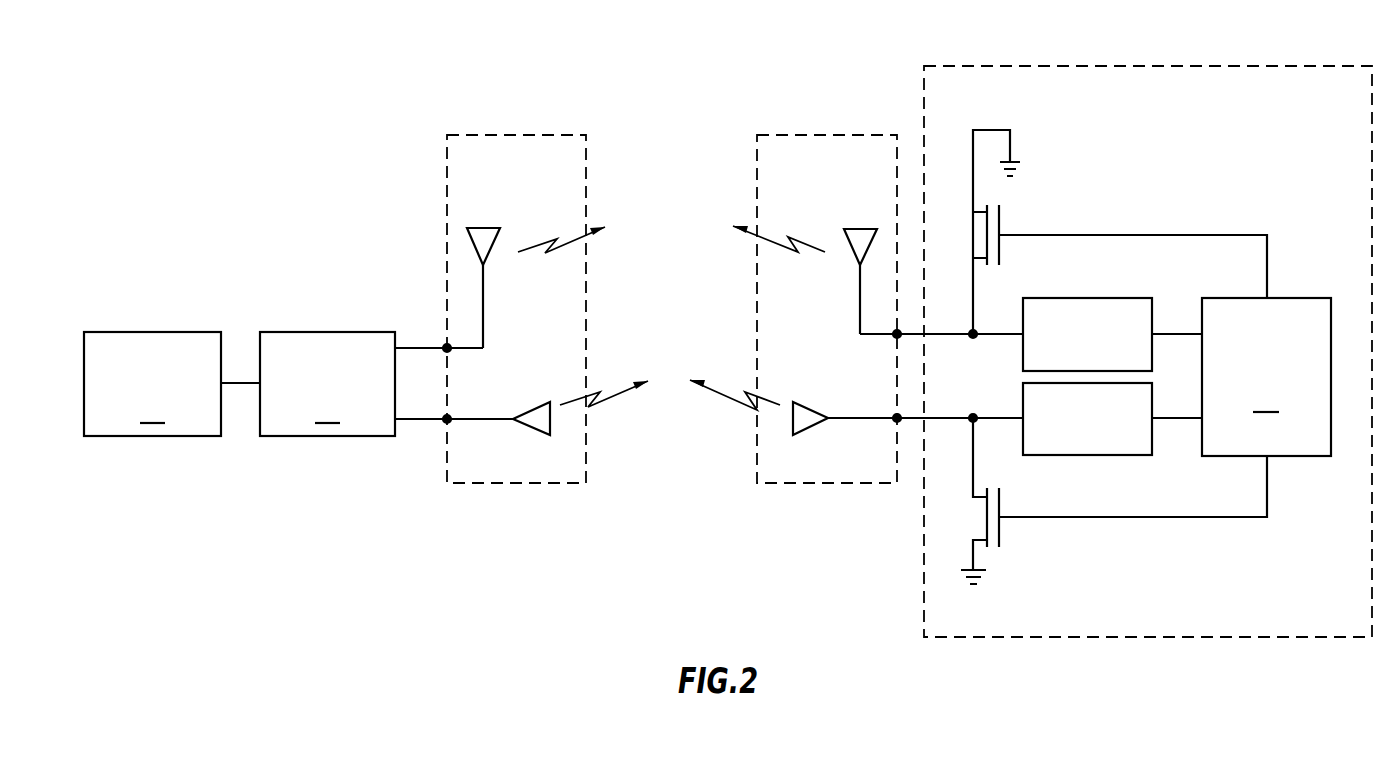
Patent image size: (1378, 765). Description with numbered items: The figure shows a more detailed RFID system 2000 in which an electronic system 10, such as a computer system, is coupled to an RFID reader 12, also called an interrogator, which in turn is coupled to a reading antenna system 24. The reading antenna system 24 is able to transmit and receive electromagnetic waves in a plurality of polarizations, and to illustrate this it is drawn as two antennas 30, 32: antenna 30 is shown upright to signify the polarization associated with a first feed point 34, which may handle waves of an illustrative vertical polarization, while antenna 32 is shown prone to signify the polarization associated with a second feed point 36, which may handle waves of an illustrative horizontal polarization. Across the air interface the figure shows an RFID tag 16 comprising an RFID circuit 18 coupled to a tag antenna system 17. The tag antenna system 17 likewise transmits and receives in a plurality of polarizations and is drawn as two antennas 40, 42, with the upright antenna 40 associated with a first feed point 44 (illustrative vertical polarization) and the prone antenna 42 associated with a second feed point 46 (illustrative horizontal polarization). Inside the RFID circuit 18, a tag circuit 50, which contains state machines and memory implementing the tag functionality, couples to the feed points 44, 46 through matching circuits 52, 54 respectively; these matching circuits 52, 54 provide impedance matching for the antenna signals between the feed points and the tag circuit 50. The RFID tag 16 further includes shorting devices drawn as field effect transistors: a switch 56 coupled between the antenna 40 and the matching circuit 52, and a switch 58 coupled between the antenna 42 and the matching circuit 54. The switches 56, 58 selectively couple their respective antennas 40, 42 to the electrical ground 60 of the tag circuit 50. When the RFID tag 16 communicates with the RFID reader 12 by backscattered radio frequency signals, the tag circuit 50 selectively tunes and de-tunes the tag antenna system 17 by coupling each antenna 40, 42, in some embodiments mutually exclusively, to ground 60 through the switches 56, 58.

The system 2000 is at (220, 83).
The electronic system 10 is at (152, 384).
The RFID reader 12 is at (327, 384).
The reading antenna system 24 is at (472, 135).
The antenna 30 is at (483, 318).
The antenna 32 is at (495, 419).
The feed point 34 is at (447, 348).
The feed point 36 is at (447, 419).
The RFID tag 16 is at (873, 100).
The tag antenna system 17 is at (768, 135).
The RFID circuit 18 is at (1280, 66).
The antenna 40 is at (860, 280).
The antenna 42 is at (858, 418).
The feed point 44 is at (897, 334).
The feed point 46 is at (897, 418).
The matching circuit 52 is at (1097, 298).
The matching circuit 54 is at (1097, 455).
The tag circuit 50 is at (1266, 377).
The switch 56 is at (1012, 225).
The switch 58 is at (1008, 530).
The ground 60 is at (1017, 162).